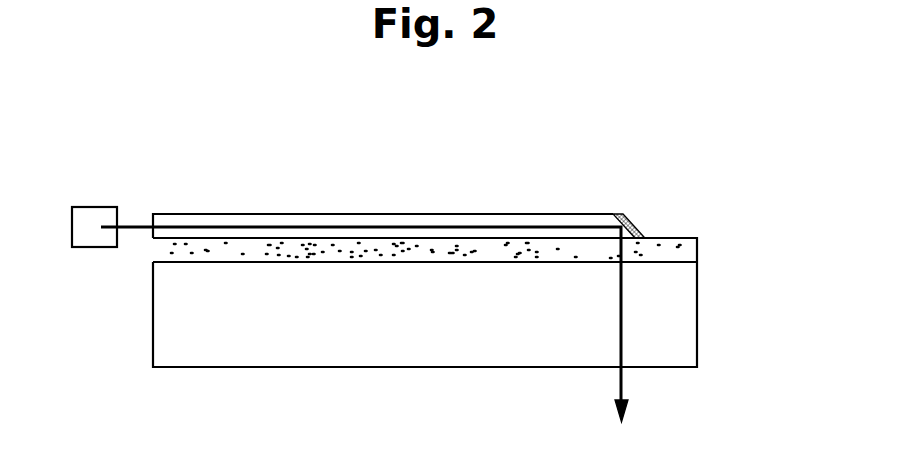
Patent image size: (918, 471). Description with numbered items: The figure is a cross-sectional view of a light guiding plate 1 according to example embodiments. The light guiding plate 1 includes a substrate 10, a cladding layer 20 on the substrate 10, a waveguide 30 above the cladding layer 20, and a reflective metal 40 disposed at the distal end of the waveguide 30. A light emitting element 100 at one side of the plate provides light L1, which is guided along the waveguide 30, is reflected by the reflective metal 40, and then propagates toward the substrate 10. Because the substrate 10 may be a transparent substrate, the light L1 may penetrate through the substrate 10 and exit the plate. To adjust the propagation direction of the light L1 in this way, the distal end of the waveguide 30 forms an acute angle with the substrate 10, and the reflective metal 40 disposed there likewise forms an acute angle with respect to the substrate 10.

The light guiding plate 1 is at (742, 150).
The substrate 10 is at (683, 303).
The cladding layer 20 is at (683, 243).
The waveguide 30 is at (510, 218).
The reflective metal 40 is at (632, 216).
The light emitting element 100 is at (96, 248).
The light L1 is at (625, 382).